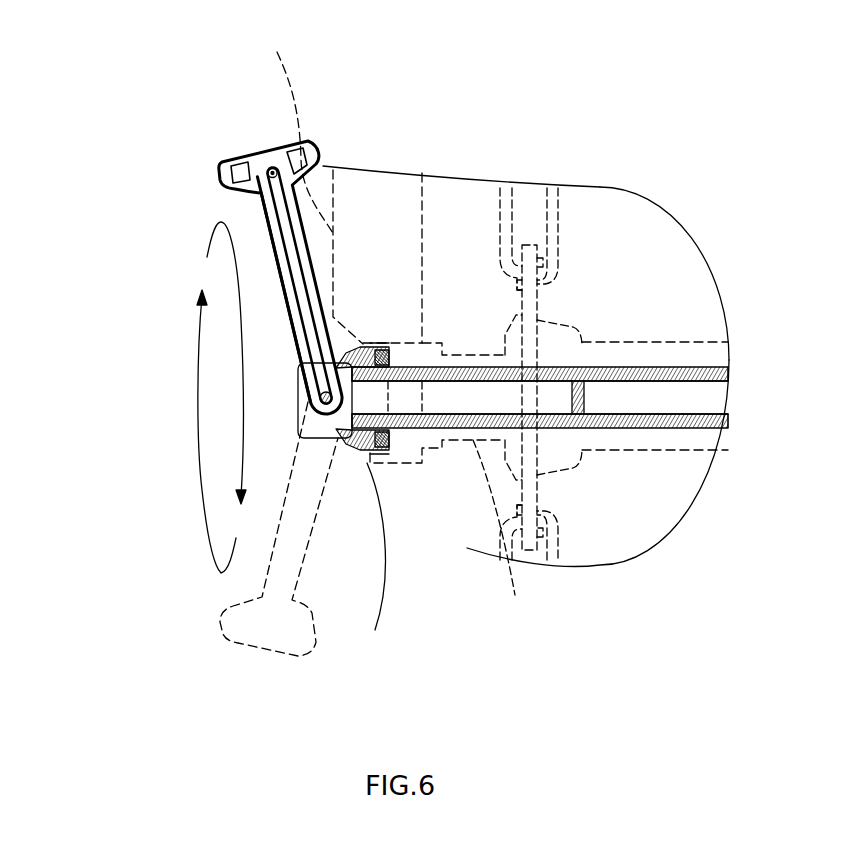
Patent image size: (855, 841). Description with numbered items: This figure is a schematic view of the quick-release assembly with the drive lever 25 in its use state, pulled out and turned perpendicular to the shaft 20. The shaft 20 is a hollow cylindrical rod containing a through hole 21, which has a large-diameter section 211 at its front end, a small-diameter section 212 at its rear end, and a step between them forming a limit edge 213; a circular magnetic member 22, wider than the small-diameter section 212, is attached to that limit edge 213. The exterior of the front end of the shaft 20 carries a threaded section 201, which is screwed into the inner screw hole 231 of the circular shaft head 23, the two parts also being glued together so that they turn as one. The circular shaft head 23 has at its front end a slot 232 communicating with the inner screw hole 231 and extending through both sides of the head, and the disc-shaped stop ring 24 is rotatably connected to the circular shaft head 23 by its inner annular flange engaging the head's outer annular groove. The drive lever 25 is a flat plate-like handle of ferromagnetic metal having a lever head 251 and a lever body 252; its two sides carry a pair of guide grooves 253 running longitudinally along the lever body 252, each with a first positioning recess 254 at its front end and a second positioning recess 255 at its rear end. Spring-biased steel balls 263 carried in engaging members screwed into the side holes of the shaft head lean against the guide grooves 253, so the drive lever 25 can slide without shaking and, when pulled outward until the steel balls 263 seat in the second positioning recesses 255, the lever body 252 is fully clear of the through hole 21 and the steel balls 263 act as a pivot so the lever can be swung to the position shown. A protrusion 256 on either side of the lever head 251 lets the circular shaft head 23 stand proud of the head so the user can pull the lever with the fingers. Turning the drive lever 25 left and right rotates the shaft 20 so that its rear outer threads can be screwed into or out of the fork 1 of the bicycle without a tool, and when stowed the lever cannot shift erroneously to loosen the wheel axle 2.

The fork 1 is at (335, 183).
The wheel axle 2 is at (527, 415).
The shaft 20 is at (551, 361).
The through hole 21 is at (405, 393).
The magnetic member 22 is at (574, 360).
The circular shaft head 23 is at (345, 440).
The stop ring 24 is at (373, 345).
The drive lever 25 is at (180, 244).
The threaded section 201 is at (372, 581).
The inner screw hole 231 is at (376, 546).
The large-diameter section 211 is at (460, 430).
The small-diameter section 212 is at (632, 402).
The limit edge 213 is at (583, 428).
The slot 232 is at (310, 412).
The lever head 251 is at (268, 147).
The lever body 252 is at (292, 316).
The guide grooves 253 is at (262, 205).
The first positioning recess 254 is at (247, 150).
The second positioning recess 255 is at (320, 398).
The protrusion 256 is at (222, 173).
The steel ball 263 is at (175, 398).